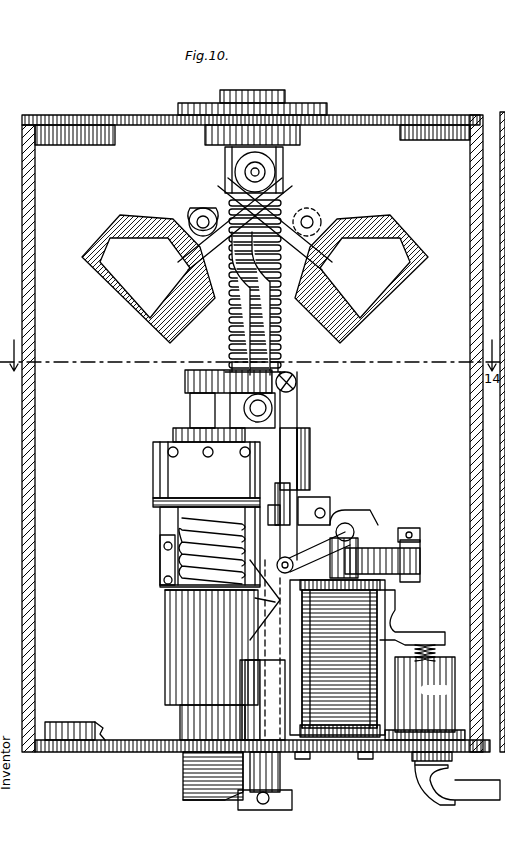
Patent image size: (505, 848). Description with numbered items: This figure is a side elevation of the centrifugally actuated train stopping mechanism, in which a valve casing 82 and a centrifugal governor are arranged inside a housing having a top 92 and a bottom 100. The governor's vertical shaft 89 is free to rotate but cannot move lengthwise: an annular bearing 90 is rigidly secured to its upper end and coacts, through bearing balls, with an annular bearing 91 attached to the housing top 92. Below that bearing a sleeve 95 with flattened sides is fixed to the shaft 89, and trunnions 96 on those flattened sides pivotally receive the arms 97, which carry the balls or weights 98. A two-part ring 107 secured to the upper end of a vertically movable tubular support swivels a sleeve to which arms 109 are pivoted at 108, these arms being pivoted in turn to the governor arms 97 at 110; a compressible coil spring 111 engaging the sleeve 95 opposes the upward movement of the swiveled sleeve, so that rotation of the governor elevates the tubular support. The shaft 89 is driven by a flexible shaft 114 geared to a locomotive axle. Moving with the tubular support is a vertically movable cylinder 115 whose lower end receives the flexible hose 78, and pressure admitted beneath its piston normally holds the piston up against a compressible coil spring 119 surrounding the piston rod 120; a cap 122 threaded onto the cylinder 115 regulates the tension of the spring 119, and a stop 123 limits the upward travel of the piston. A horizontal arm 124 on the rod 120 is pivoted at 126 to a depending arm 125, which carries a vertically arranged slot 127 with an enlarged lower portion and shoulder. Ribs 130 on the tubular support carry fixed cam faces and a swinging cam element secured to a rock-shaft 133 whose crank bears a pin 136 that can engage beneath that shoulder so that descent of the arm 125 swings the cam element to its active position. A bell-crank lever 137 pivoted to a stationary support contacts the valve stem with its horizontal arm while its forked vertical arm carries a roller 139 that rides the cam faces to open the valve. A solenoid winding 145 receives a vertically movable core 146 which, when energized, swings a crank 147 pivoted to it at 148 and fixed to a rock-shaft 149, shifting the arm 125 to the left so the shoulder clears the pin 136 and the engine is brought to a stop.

The flexible hose 78 is at (190, 778).
The valve casing 82 is at (425, 698).
The vertical shaft 89 is at (232, 336).
The annular bearing 90 is at (283, 96).
The coacting annular bearing 91 is at (300, 135).
The housing top 92 is at (95, 118).
The sleeve 95 is at (283, 158).
The trunnions 96 is at (258, 172).
The arms 97 is at (222, 193).
The balls or weights 98 is at (255, 279).
The housing bottom 100 is at (350, 752).
The two-part ring 107 is at (310, 432).
The pivotal connection 108 is at (275, 408).
The arms 109 is at (262, 351).
The pivotal connection 110 is at (195, 215).
The compressible coil spring 111 is at (230, 346).
The flexible shaft 114 is at (292, 805).
The vertically movable cylinder 115 is at (175, 635).
The compressible coil spring 119 is at (190, 568).
The piston rod 120 is at (200, 410).
The cap 122 is at (175, 470).
The stop 123 is at (165, 590).
The horizontal arm 124 is at (185, 385).
The depending arm 125 is at (290, 452).
The pivotal connection 126 is at (297, 382).
The vertically arranged slot 127 is at (292, 490).
The ribs 130 is at (350, 525).
The rock-shaft 133 is at (330, 510).
The lateral extension or pin 136 is at (270, 512).
The bell-crank lever 137 is at (412, 617).
The roller 139 is at (370, 530).
The solenoid winding 145 is at (418, 640).
The vertically movable core 146 is at (420, 570).
The crank 147 is at (405, 530).
The pivot 148 is at (420, 555).
The rock-shaft 149 is at (275, 600).